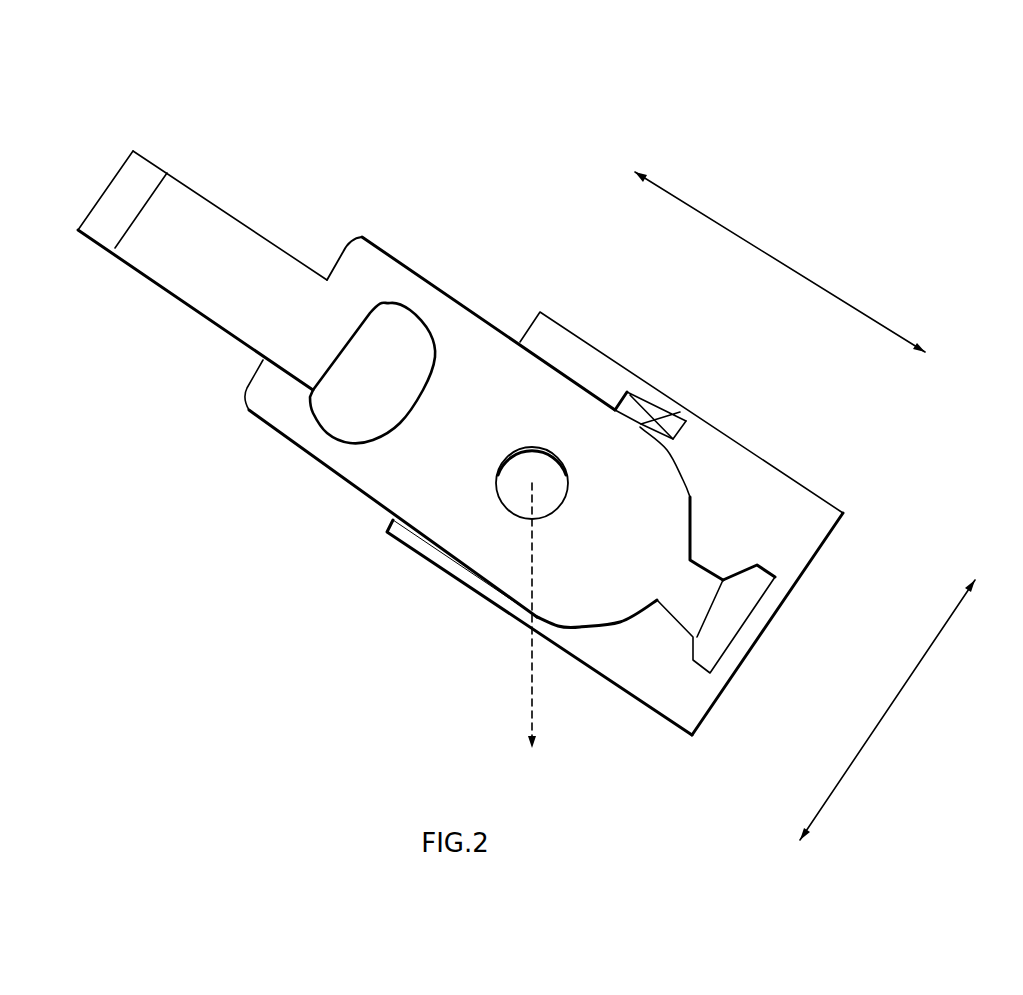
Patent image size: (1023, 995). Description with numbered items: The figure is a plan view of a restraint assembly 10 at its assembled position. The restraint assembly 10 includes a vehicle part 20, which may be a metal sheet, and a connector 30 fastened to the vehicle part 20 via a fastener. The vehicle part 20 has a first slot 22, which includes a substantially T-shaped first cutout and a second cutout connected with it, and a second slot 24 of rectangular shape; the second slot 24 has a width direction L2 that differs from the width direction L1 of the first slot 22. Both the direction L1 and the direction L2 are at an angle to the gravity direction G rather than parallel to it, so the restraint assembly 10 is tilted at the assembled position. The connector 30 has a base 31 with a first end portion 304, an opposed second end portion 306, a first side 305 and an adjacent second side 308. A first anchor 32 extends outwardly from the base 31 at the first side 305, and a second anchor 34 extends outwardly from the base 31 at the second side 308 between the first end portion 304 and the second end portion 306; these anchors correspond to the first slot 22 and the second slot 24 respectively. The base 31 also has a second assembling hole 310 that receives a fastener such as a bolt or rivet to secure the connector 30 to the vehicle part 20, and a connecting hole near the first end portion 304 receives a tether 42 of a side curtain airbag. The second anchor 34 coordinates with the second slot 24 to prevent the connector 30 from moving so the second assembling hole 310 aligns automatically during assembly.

The restraint assembly 10 is at (733, 135).
The vehicle part 20 is at (845, 528).
The first slot 22 is at (710, 645).
The second slot 24 is at (682, 425).
The connector 30 is at (495, 320).
The base 31 is at (410, 477).
The first anchor 32 is at (697, 565).
The second anchor 34 is at (648, 403).
The tether 42 is at (218, 253).
The first end portion 304 is at (357, 253).
The first side 305 is at (697, 510).
The second end portion 306 is at (620, 600).
The second side 308 is at (557, 368).
The second assembling hole 310 is at (510, 498).
The gravity direction G is at (515, 615).
The width direction of the first slot L1 is at (887, 710).
The width direction of the second slot L2 is at (780, 262).